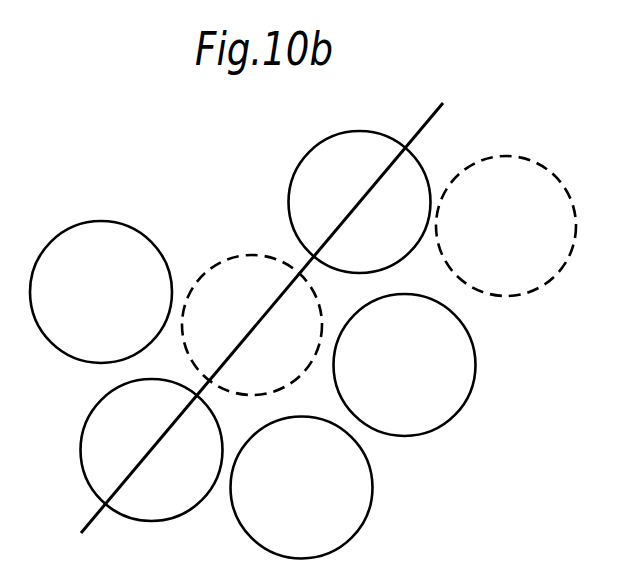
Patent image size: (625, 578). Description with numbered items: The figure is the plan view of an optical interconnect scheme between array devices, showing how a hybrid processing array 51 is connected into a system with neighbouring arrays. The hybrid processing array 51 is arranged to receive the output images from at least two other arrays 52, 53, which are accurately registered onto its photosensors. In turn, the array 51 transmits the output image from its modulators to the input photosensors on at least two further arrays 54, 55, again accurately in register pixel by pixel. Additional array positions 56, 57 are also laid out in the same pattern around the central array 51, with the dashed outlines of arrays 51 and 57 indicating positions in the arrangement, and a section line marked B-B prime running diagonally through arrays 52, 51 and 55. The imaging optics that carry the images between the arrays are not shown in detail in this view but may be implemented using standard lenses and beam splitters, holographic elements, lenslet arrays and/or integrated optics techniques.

The hybrid processing array 51 is at (296, 370).
The array 52 is at (194, 499).
The array 53 is at (345, 537).
The array 54 is at (443, 414).
The array 55 is at (412, 239).
The circular region 56 is at (147, 337).
The circular region (dashed) 57 is at (557, 269).